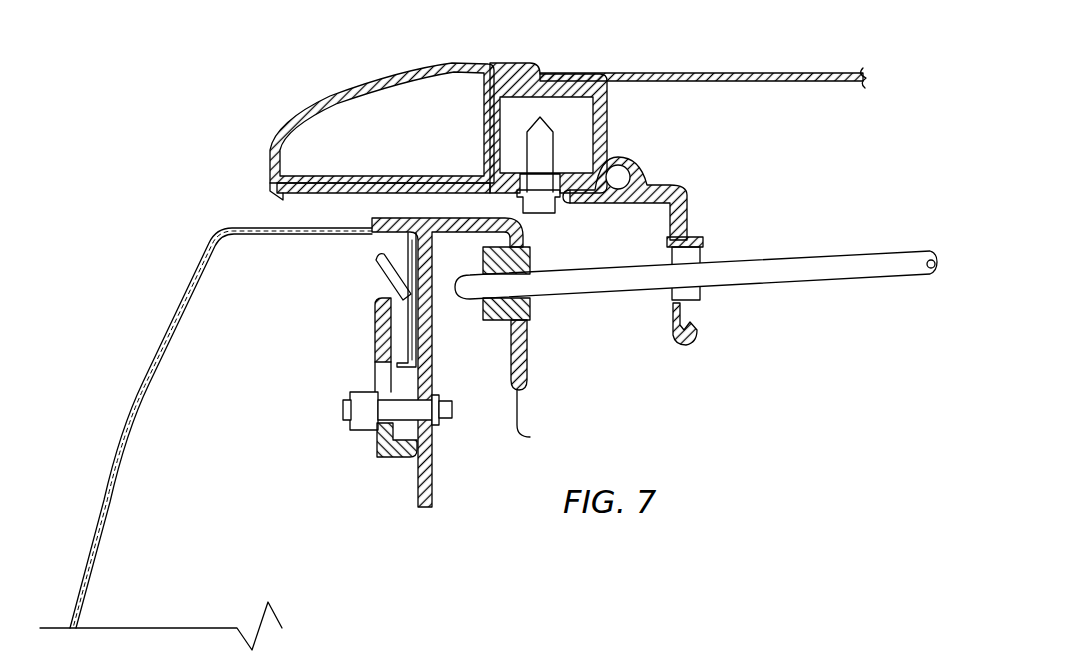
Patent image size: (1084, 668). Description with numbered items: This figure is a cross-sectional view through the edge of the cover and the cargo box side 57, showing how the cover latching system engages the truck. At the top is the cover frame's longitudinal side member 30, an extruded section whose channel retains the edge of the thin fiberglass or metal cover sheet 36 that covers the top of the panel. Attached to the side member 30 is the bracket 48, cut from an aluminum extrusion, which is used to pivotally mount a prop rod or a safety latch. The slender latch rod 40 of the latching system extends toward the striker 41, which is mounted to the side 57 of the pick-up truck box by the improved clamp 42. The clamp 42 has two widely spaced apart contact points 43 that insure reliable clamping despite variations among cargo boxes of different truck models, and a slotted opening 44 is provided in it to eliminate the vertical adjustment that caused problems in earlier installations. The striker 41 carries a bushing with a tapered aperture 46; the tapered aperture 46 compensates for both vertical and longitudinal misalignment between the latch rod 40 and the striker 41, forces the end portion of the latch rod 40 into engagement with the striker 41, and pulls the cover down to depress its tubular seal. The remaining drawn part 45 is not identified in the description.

The longitudinal side member 30 is at (373, 78).
The cover sheet 36 is at (726, 73).
The latch rod 40 is at (803, 252).
The striker 41 is at (546, 426).
The clamp 42 is at (380, 457).
The contact point 43 is at (417, 310).
The slotted opening 44 is at (373, 383).
The support leg 45 is at (528, 324).
The tapered aperture 46 is at (524, 272).
The bracket 48 is at (663, 185).
The cargo box side 57 is at (157, 347).